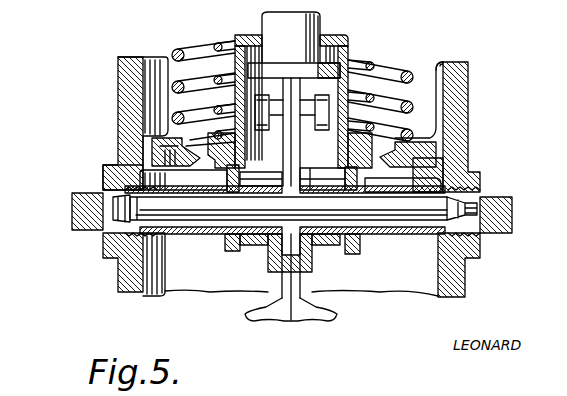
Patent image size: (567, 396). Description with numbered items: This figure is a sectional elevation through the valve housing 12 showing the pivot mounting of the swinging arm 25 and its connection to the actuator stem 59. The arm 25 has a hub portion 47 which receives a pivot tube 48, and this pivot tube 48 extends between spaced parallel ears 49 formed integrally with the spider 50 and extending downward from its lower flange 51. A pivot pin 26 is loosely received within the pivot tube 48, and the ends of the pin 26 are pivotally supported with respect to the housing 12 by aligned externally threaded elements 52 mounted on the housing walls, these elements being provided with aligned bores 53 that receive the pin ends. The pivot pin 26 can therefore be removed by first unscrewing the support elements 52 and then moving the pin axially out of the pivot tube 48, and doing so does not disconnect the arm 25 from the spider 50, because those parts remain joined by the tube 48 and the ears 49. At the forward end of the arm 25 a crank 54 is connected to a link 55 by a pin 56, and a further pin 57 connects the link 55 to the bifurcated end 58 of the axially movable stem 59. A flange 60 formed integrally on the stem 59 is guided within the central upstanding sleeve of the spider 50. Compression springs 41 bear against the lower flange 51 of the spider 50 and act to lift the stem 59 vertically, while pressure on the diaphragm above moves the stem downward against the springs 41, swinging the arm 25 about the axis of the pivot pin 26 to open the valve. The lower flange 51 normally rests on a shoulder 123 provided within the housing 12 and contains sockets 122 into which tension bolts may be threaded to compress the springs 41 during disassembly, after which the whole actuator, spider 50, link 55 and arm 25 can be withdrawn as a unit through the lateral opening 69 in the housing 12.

The housing 12 is at (462, 96).
The swinging arm 25 is at (312, 312).
The pivot pin 26 is at (400, 216).
The compression springs 41 is at (191, 49).
The hub portion 47 is at (255, 242).
The pivot tube 48 is at (325, 246).
The ears 49 is at (226, 247).
The spider 50 is at (370, 76).
The lower flange 51 is at (432, 150).
The externally threaded elements 52 is at (78, 218).
The bores 53 is at (73, 207).
The crank 54 is at (232, 176).
The link 55 is at (214, 106).
The pin 56 is at (318, 176).
The pin 57 is at (374, 118).
The bifurcated end 58 is at (350, 63).
The stem 59 is at (289, 22).
The flange 60 is at (283, 70).
The lateral opening 69 is at (443, 63).
The sockets 122 is at (155, 150).
The shoulder 123 is at (434, 160).